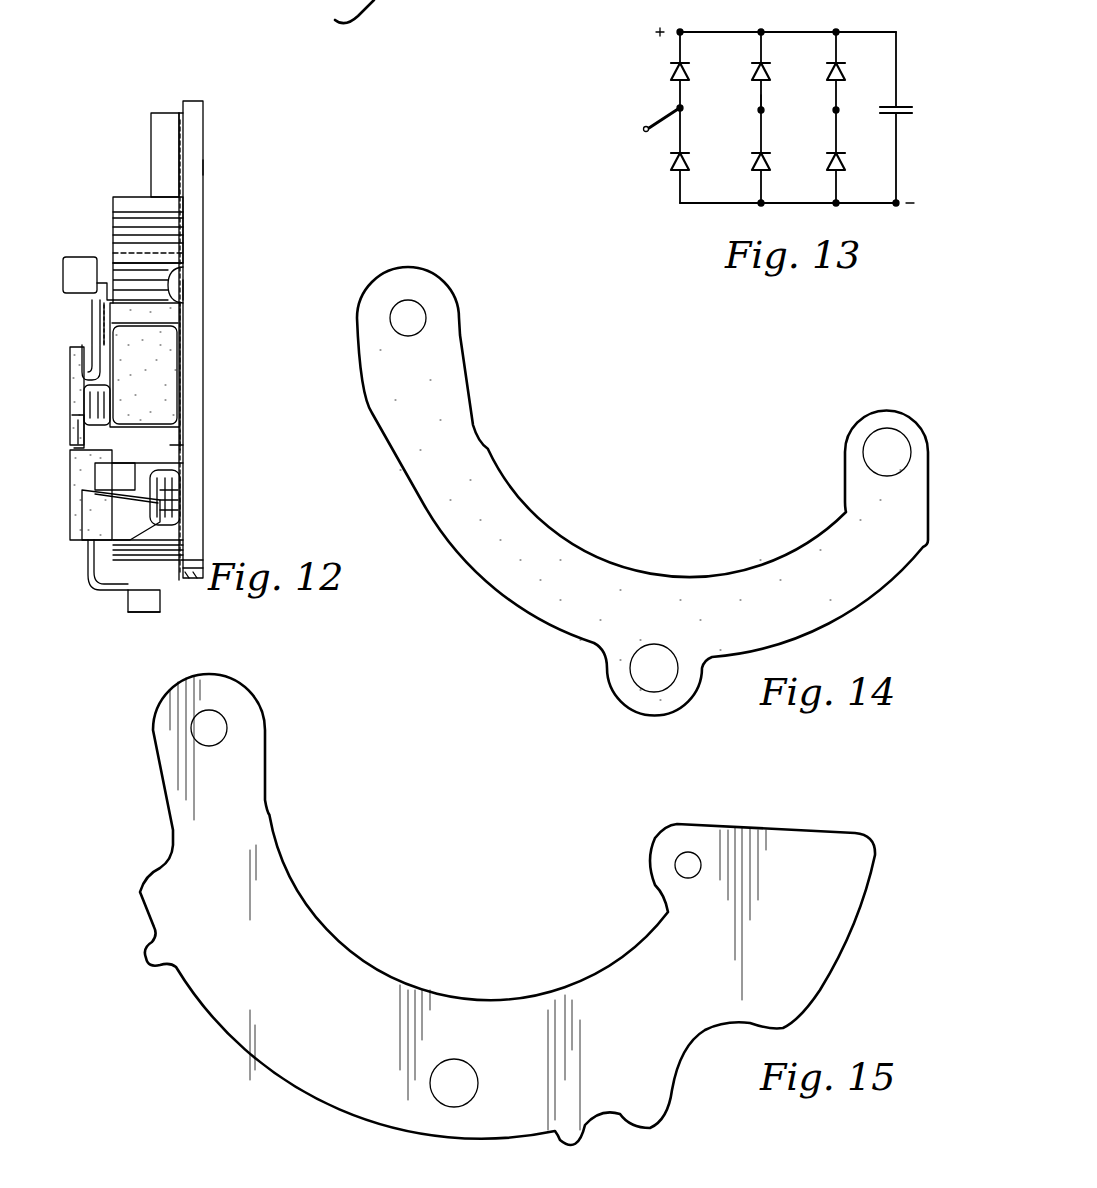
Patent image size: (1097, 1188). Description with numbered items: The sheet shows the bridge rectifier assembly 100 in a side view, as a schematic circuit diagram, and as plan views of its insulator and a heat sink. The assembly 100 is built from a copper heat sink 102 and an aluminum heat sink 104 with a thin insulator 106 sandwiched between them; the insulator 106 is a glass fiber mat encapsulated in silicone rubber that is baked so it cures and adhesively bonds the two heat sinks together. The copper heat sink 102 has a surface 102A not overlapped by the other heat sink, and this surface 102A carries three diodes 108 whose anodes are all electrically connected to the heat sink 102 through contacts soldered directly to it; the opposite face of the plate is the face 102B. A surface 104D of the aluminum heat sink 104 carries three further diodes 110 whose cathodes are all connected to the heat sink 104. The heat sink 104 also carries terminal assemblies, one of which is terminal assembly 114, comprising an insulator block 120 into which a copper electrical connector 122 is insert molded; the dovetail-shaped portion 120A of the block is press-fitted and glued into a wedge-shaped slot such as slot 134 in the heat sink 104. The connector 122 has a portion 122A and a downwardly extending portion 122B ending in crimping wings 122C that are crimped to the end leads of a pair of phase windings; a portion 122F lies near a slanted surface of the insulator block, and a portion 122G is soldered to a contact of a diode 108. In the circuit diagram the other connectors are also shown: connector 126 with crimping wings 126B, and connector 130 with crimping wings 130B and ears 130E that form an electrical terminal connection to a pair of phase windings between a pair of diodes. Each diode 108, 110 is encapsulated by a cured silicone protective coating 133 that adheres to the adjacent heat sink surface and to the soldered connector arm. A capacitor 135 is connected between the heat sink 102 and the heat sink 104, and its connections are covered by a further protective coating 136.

In FIG. 12, the bridge rectifier assembly 100 is at (210, 258).
In FIG. 12, the copper heat sink 102 is at (195, 135).
In FIG. 13, the copper heat sink 102 is at (700, 205).
In FIG. 15, the copper heat sink 102 is at (335, 975).
In FIG. 12, the surface of heat sink 102A is at (178, 140).
In FIG. 12, the heat sink outer face 102B is at (205, 165).
In FIG. 12, the aluminum heat sink 104 is at (151, 153).
In FIG. 13, the aluminum heat sink 104 is at (700, 32).
In FIG. 12, the surface of heat sink 104D is at (110, 215).
In FIG. 12, the insulator 106 is at (177, 104).
In FIG. 14, the insulator 106 is at (455, 420).
In FIG. 12, the diode 108 is at (210, 487).
In FIG. 13, the diode 108 is at (672, 166).
In FIG. 12, the diode 110 is at (93, 400).
In FIG. 13, the diode 110 is at (668, 72).
In FIG. 12, the terminal assembly 114 is at (63, 493).
In FIG. 12, the insulator block 120 is at (82, 540).
In FIG. 12, the dovetail-shaped portion 120A is at (95, 480).
In FIG. 12, the electrical connector 122 is at (80, 445).
In FIG. 13, the electrical connector 122 is at (838, 98).
In FIG. 12, the connector portion 122A is at (86, 575).
In FIG. 12, the downwardly extending portion 122B is at (120, 600).
In FIG. 12, the crimping wings 122C is at (140, 610).
In FIG. 13, the crimping wings 122C is at (838, 112).
In FIG. 12, the connector portion 122F is at (137, 450).
In FIG. 12, the connector portion 122G is at (180, 500).
In FIG. 13, the electrical connector 126 is at (760, 140).
In FIG. 13, the crimping wings 126B is at (760, 108).
In FIG. 12, the electrical connector 130 is at (88, 372).
In FIG. 13, the electrical connector 130 is at (680, 136).
In FIG. 13, the crimping wings 130B is at (678, 107).
In FIG. 12, the ears 130E is at (80, 265).
In FIG. 13, the ears 130E is at (644, 129).
In FIG. 12, the protective coating 133 is at (150, 335).
In FIG. 13, the dovetail slot 134 is at (900, 115).
In FIG. 12, the capacitor 135 is at (165, 350).
In FIG. 12, the protective coating 136 is at (182, 292).